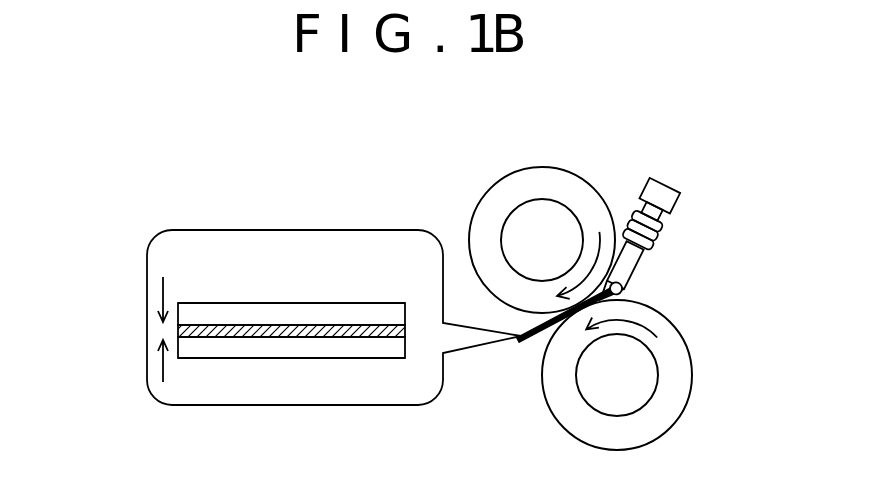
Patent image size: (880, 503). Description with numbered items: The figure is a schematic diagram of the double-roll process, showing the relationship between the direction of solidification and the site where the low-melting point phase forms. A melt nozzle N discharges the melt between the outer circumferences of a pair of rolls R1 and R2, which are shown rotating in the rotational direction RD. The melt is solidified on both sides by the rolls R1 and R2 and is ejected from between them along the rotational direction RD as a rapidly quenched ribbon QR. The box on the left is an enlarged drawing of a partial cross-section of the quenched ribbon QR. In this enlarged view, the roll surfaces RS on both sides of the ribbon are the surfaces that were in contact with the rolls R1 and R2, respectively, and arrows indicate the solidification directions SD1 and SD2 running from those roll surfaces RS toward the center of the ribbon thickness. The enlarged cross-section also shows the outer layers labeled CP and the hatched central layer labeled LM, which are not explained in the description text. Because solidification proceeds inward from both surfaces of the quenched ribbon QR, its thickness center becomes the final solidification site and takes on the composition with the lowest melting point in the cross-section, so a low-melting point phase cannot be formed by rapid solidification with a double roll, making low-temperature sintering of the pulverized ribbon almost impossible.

The roll R1 is at (557, 167).
The roll R2 is at (689, 396).
The rotational direction RD is at (597, 235).
The melt nozzle N is at (641, 262).
The rapidly quenched ribbon QR is at (533, 338).
The cover plate layer CP is at (235, 313).
The liquid metal layer LM is at (300, 326).
The roll surface RS is at (392, 303).
The solidification direction SD1 is at (162, 290).
The solidification direction SD2 is at (162, 369).